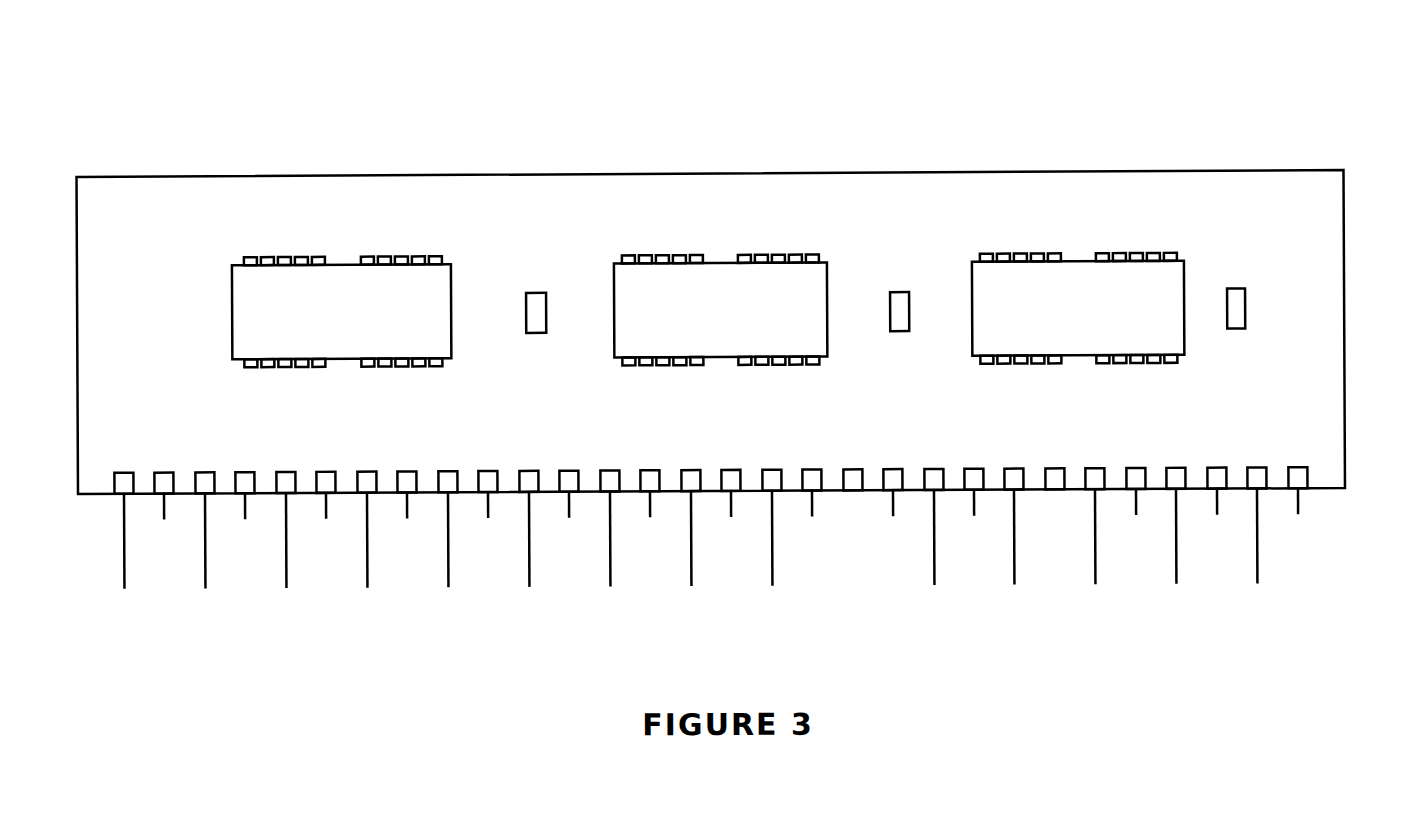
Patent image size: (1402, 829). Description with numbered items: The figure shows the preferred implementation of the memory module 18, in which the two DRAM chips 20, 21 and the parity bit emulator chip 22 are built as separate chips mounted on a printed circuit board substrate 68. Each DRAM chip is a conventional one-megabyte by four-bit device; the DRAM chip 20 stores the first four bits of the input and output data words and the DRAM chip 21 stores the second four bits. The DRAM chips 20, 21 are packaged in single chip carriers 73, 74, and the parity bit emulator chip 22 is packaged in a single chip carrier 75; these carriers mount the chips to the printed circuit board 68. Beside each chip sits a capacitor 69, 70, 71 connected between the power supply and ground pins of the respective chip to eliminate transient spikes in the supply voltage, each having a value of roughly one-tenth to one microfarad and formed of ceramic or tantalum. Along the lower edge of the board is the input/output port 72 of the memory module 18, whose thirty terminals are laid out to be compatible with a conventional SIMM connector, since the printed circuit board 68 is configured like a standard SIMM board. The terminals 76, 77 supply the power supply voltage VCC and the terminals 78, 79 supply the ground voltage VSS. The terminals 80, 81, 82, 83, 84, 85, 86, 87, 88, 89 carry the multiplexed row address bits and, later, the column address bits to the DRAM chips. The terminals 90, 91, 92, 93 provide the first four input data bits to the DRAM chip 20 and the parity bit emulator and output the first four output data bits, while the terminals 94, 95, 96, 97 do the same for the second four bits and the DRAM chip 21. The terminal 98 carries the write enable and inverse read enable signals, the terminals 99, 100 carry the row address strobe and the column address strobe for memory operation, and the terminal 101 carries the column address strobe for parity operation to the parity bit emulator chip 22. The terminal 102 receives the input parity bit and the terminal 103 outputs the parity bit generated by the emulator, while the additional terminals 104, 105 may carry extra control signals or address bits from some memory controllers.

The memory module 18 is at (895, 112).
The printed circuit board substrate 68 is at (710, 307).
The DRAM chip 20 is at (374, 304).
The single chip carrier 73 is at (374, 304).
The DRAM chip 21 is at (751, 293).
The single chip carrier 74 is at (751, 293).
The parity bit emulator chip 22 is at (1103, 290).
The single chip carrier 75 is at (1103, 290).
The capacitor 69 is at (550, 289).
The capacitor 70 is at (911, 287).
The capacitor 71 is at (1249, 283).
The input/output port 72 is at (60, 459).
The terminal 76 is at (124, 473).
The terminal 77 is at (1298, 473).
The terminal 78 is at (448, 473).
The terminal 79 is at (974, 473).
The terminal 80 is at (245, 473).
The terminal 81 is at (286, 473).
The terminal 82 is at (367, 473).
The terminal 83 is at (407, 473).
The terminal 84 is at (529, 473).
The terminal 85 is at (569, 473).
The terminal 86 is at (650, 473).
The terminal 87 is at (691, 473).
The terminal 88 is at (772, 473).
The terminal 89 is at (812, 473).
The terminal 90 is at (205, 473).
The terminal 91 is at (326, 473).
The terminal 92 is at (488, 473).
The terminal 93 is at (610, 473).
The terminal 94 is at (731, 473).
The terminal 95 is at (893, 473).
The terminal 96 is at (1014, 473).
The terminal 97 is at (1095, 473).
The terminal 98 is at (934, 473).
The terminal 99 is at (1176, 473).
The terminal 100 is at (164, 473).
The terminal 101 is at (1217, 473).
The terminal 102 is at (1136, 473).
The terminal 103 is at (1257, 473).
The additional terminal 104 is at (853, 473).
The additional terminal 105 is at (1055, 473).